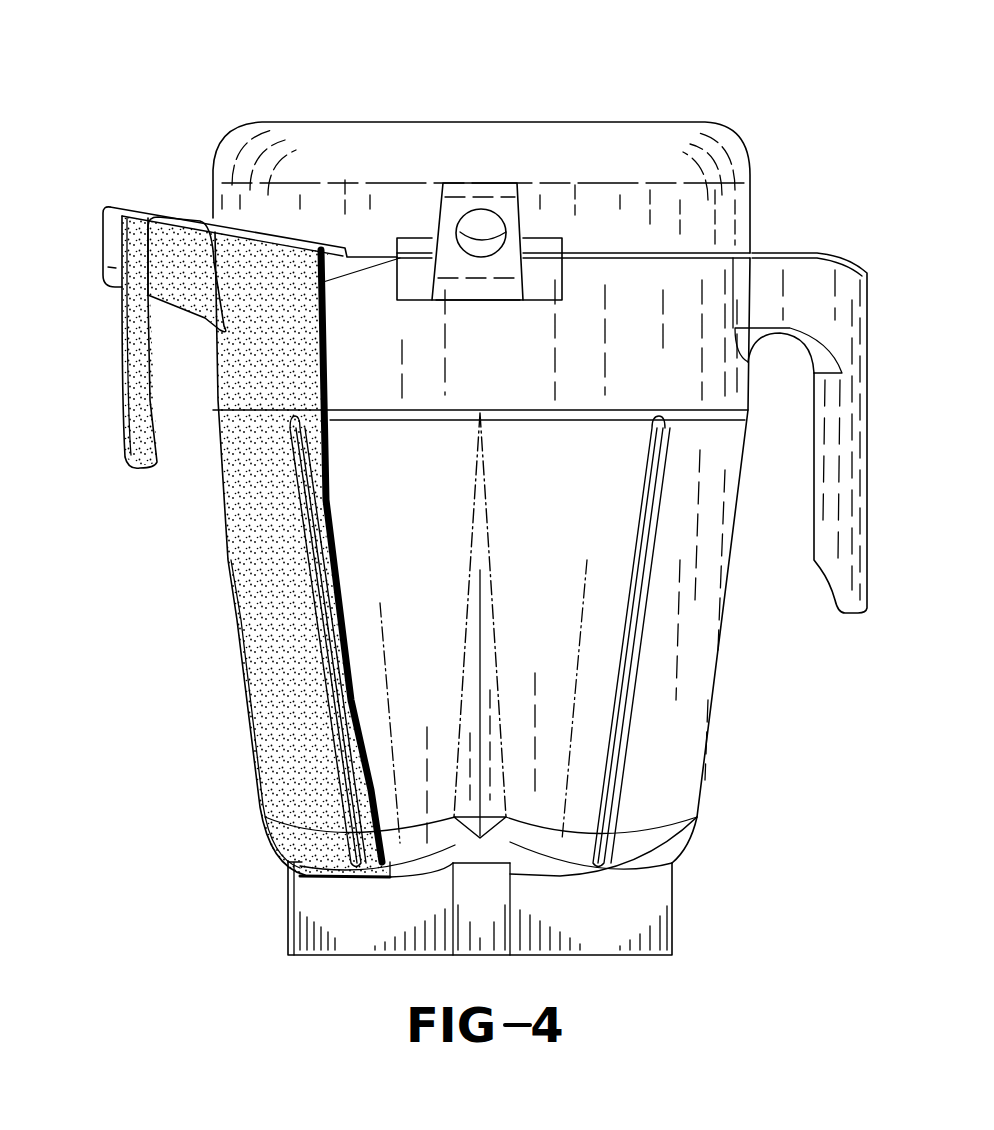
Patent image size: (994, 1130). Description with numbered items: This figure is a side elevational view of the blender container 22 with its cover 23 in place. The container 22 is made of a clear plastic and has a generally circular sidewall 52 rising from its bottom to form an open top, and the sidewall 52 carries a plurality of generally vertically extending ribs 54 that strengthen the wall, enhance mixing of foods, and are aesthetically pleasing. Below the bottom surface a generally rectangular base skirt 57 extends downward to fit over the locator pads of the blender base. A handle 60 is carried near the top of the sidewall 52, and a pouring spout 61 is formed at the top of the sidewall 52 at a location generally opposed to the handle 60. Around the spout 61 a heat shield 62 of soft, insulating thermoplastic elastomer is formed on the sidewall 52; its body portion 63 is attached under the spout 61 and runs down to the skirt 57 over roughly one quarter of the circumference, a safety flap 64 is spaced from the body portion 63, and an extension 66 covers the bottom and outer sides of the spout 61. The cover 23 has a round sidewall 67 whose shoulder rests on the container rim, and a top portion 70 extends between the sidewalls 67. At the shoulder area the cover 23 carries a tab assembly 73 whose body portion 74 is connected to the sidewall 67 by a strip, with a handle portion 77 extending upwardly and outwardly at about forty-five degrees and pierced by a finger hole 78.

The blender container 22 is at (234, 745).
The cover 23 is at (572, 110).
The sidewall 52 is at (560, 665).
The ribs 54 is at (318, 540).
The base skirt 57 is at (600, 905).
The handle 60 is at (808, 268).
The pouring spout 61 is at (100, 240).
The heat shield 62 is at (238, 662).
The body portion 63 is at (258, 572).
The safety flap 64 is at (140, 388).
The heat shield extension 66 is at (177, 267).
The sidewall 67 is at (292, 205).
The top portion 70 is at (648, 146).
The tab assembly 73 is at (432, 220).
The body portion 74 is at (475, 292).
The handle portion 77 is at (458, 190).
The finger hole 78 is at (473, 222).